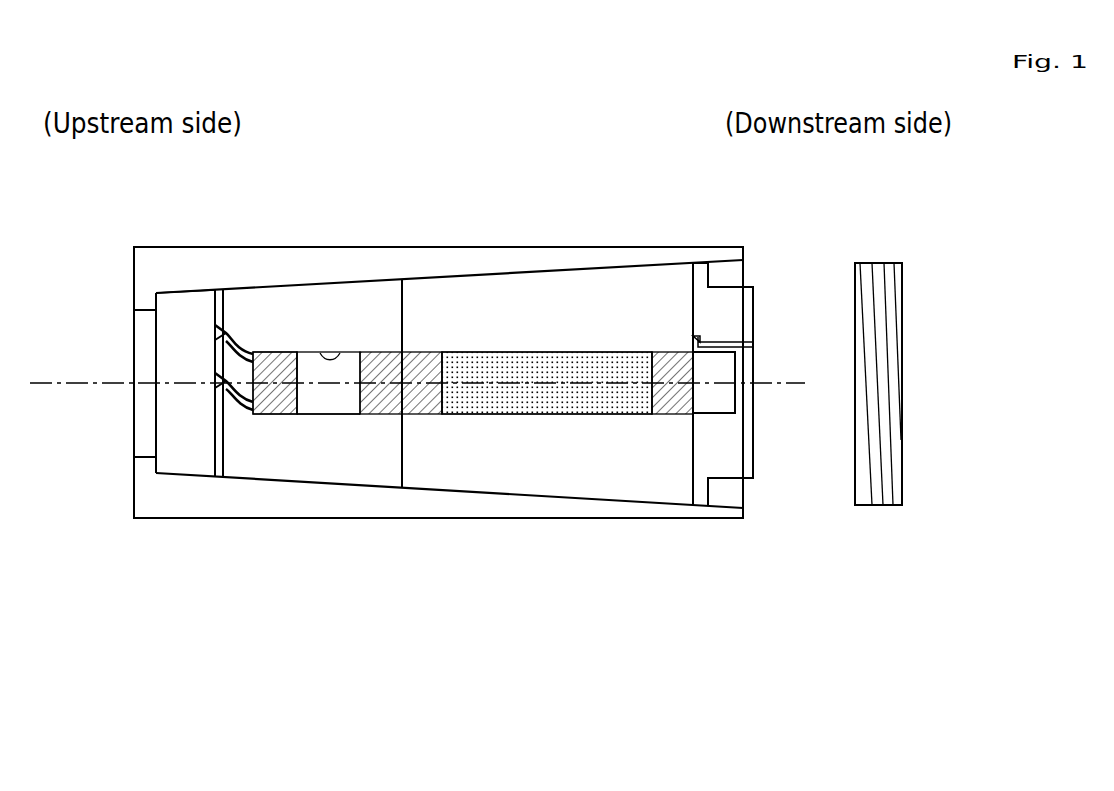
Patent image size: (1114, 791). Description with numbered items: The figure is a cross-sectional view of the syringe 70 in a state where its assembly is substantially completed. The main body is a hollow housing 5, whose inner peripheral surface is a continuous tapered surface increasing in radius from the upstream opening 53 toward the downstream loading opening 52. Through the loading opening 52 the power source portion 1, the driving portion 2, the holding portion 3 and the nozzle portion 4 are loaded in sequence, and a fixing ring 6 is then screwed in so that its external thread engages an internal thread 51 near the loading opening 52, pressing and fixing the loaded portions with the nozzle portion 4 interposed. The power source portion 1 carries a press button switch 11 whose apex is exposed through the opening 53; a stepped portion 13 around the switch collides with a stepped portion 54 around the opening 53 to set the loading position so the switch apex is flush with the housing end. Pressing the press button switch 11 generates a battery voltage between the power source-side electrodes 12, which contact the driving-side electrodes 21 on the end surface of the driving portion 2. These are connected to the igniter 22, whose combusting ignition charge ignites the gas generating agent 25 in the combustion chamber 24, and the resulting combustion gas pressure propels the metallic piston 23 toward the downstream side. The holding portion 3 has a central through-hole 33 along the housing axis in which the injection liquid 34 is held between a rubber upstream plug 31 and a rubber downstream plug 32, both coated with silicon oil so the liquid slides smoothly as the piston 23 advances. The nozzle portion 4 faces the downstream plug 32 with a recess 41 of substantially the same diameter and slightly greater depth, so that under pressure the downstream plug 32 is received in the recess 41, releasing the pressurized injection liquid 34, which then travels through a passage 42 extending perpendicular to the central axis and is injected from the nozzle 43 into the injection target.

The power source portion 1 is at (183, 453).
The driving portion 2 is at (335, 462).
The holding portion 3 is at (585, 480).
The nozzle portion 4 is at (707, 445).
The housing 5 is at (245, 263).
The fixing ring 6 is at (880, 500).
The press button switch 11 is at (148, 355).
The power source-side electrodes 12 is at (190, 375).
The stepped portion 13 is at (163, 300).
The driving-side electrodes 21 is at (255, 345).
The igniter 22 is at (268, 420).
The piston 23 is at (380, 403).
The combustion chamber 24 is at (330, 363).
The gas generating agent 25 is at (320, 403).
The upstream plug 31 is at (425, 365).
The downstream plug 32 is at (670, 360).
The through-hole 33 is at (495, 400).
The injection liquid 34 is at (550, 360).
The recess 41 is at (717, 402).
The passage 42 is at (697, 338).
The nozzle 43 is at (728, 343).
The internal thread 51 is at (730, 503).
The loading opening 52 is at (743, 272).
The opening 53 is at (134, 415).
The stepped portion 54 is at (153, 300).
The syringe 70 is at (152, 660).